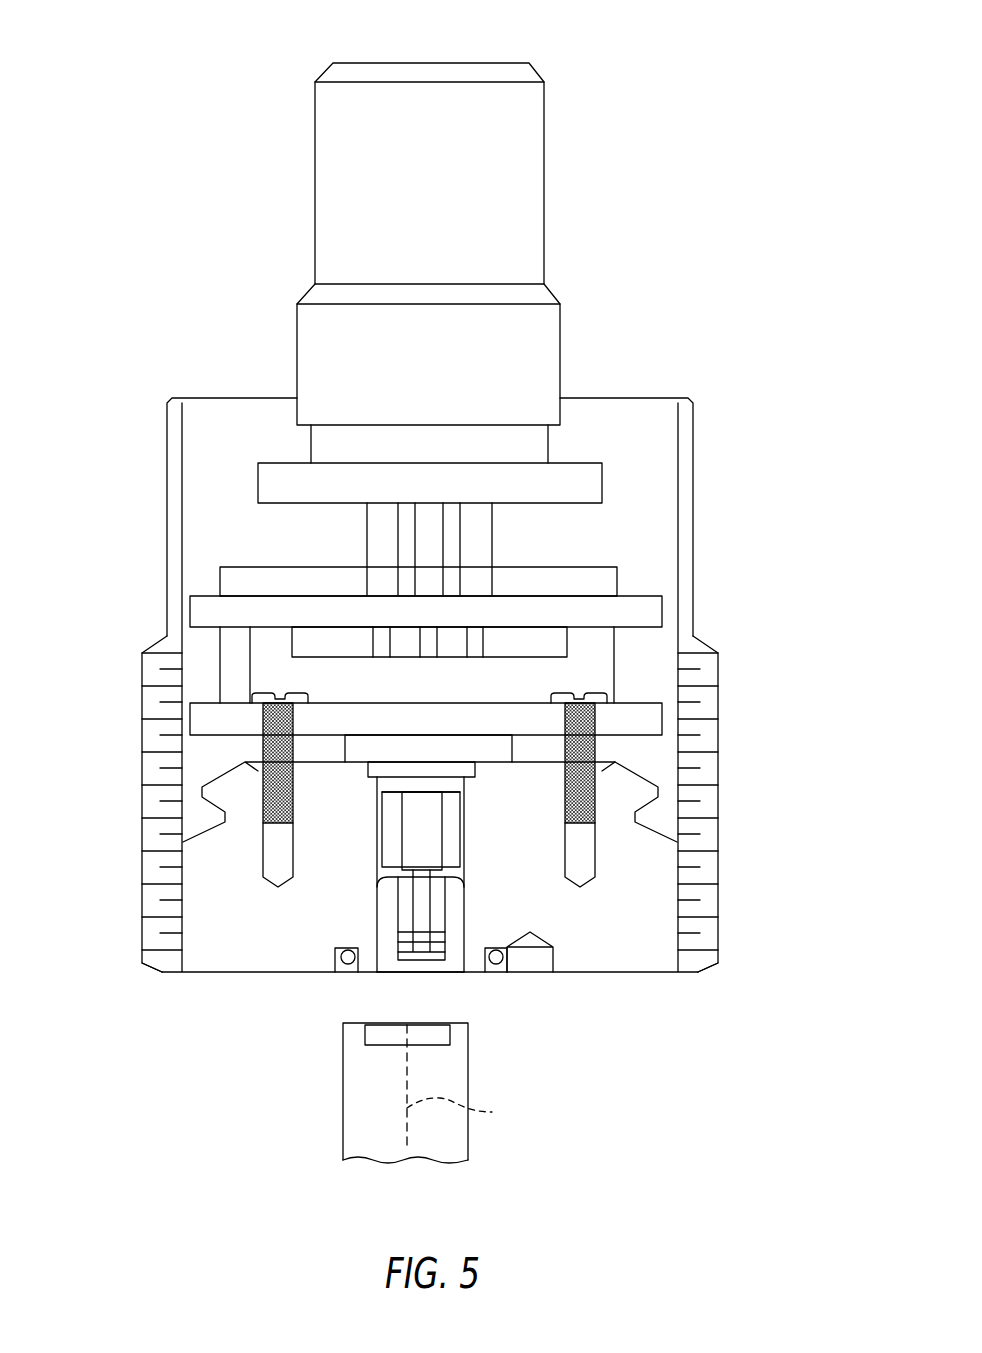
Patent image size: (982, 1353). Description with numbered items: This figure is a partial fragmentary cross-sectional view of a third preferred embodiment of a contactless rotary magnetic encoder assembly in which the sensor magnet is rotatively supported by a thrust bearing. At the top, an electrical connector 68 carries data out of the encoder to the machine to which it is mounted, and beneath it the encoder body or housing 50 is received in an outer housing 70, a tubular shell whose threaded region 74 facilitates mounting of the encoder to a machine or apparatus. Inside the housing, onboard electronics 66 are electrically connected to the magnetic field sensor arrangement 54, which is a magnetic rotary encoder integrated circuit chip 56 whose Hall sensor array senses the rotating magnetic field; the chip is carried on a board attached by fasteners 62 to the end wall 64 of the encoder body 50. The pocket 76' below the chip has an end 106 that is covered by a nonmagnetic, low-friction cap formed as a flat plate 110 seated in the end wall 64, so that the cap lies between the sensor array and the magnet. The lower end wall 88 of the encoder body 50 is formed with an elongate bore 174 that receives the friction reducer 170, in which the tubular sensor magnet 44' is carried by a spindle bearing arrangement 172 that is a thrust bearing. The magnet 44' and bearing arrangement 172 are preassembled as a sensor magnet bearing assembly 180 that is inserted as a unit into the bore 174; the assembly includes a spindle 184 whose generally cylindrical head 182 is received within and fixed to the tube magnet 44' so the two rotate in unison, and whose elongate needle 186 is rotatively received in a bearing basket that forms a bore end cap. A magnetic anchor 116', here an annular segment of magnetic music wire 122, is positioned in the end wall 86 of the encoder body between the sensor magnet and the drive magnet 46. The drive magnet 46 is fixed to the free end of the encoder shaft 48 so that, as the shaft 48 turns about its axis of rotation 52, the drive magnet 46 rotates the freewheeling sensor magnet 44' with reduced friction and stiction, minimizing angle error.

The electrical connector 68 is at (562, 130).
The outer housing 70 is at (703, 383).
The threaded region 74 is at (728, 654).
The electronics 66 is at (633, 533).
The magnetic field sensor arrangement 54 is at (398, 730).
The fasteners 62 is at (582, 694).
The magnetic rotary encoder integrated circuit chip 56 is at (453, 745).
The plate 110 is at (475, 768).
The pocket 76' is at (423, 729).
The end of the pocket 106 is at (367, 777).
The end wall of the encoder body 64 is at (614, 765).
The encoder body 50 is at (655, 820).
The friction reducer 170 is at (375, 913).
The spindle bearing arrangement 172 is at (487, 925).
The spindle head 182 is at (426, 833).
The spindle 184 is at (400, 851).
The sensor magnet 44' is at (484, 869).
The bore 174 is at (455, 975).
The needle 186 is at (388, 893).
The magnetic anchor 116' is at (294, 988).
The annular segment of wire 122 is at (350, 964).
The sensor magnet bearing assembly 180 is at (380, 977).
The end wall of the encoder body 88 is at (200, 972).
The end wall 86 is at (620, 972).
The encoder shaft 48 is at (487, 1132).
The drive magnet 46 is at (415, 1030).
The axis of rotation 52 is at (463, 1107).